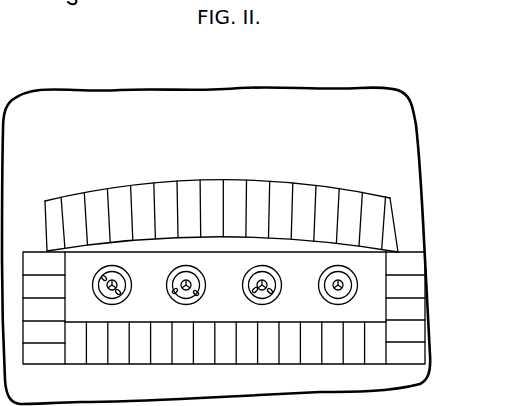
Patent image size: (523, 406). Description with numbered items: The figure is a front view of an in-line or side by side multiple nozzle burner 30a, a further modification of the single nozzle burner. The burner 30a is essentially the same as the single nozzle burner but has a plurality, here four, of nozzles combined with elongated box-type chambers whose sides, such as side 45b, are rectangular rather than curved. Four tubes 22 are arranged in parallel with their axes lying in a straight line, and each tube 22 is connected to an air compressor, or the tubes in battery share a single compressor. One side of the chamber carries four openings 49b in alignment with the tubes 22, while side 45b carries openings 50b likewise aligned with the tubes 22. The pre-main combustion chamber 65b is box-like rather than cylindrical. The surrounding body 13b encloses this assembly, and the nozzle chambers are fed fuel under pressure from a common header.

The housing block 13b is at (325, 102).
The in-line multiple nozzle burner 30a is at (316, 184).
The side 45b is at (145, 258).
The pre-main combustion chamber 65b is at (223, 252).
The tubes 22 is at (108, 285).
The openings 49b is at (175, 291).
The openings 50b is at (194, 297).